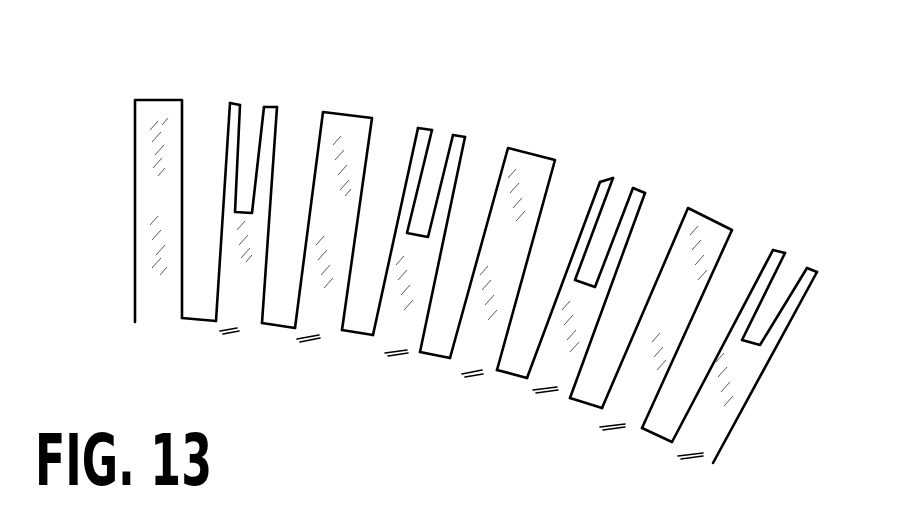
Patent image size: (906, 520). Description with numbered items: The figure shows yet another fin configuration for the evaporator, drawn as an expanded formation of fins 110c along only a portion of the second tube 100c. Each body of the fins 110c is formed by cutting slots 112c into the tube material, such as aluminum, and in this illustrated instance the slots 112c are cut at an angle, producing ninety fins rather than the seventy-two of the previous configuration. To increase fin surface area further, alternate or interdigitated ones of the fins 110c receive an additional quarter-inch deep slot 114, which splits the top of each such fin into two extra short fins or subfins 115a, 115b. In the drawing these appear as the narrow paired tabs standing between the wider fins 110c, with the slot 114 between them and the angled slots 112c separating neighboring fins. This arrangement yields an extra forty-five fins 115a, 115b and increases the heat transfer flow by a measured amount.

The second tube 100c is at (157, 190).
The fins 110c is at (165, 303).
The slots 112c is at (185, 120).
The slot 114 is at (245, 132).
The subfin 115a is at (235, 102).
The subfin 115b is at (272, 107).